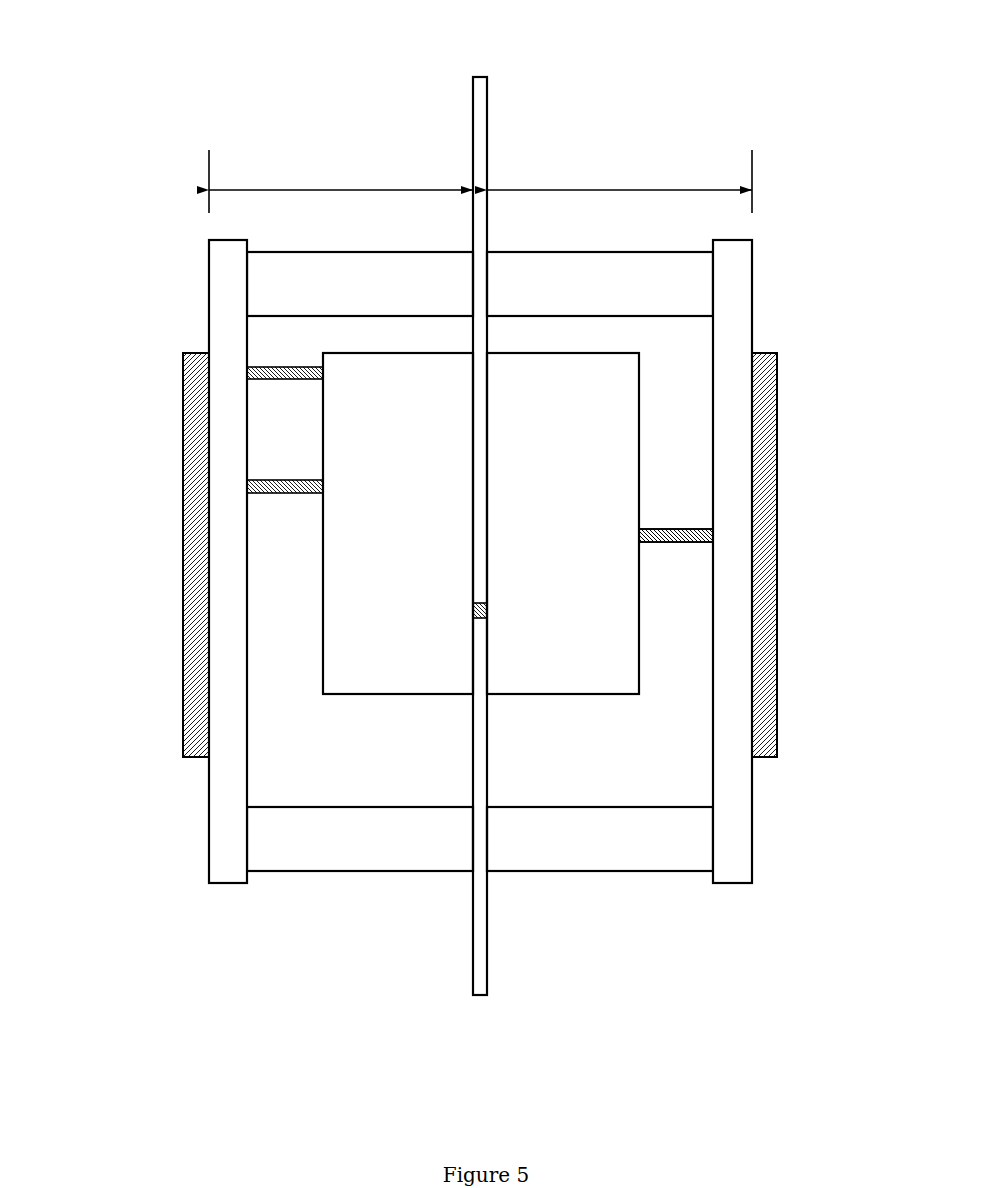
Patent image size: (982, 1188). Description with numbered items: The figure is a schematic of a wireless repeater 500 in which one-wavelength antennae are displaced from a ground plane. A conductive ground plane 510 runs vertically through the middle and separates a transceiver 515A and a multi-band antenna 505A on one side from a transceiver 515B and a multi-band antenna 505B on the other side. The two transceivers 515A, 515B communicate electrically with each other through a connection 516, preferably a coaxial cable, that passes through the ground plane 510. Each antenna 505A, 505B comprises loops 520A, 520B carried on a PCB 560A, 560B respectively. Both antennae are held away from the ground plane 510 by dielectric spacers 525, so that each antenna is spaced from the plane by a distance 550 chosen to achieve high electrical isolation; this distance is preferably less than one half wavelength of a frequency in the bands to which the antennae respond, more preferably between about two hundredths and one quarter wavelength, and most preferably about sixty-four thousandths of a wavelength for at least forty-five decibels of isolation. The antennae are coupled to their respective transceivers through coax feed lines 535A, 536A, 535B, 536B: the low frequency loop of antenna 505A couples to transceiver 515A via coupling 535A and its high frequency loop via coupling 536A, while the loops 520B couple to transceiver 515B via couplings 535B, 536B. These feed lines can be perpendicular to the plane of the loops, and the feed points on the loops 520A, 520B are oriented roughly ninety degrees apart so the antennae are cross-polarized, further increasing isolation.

The repeater 500 is at (95, 113).
The conductive ground plane 510 is at (487, 113).
The distance 550 is at (480, 167).
The dielectric spacer 525 is at (480, 561).
The transceiver 515A is at (372, 410).
The transceiver 515B is at (537, 411).
The connection 516 is at (487, 603).
The multi-band antenna 505A is at (201, 605).
The multi-band antenna 505B is at (759, 599).
The PCB 560A is at (208, 314).
The PCB 560B is at (753, 290).
The loops 520A is at (183, 440).
The loops 520B is at (778, 415).
The coax feed line 535A is at (298, 341).
The coax feed line 536A is at (298, 455).
The coax feed line 535B is at (688, 528).
The coax feed line 536B is at (676, 510).